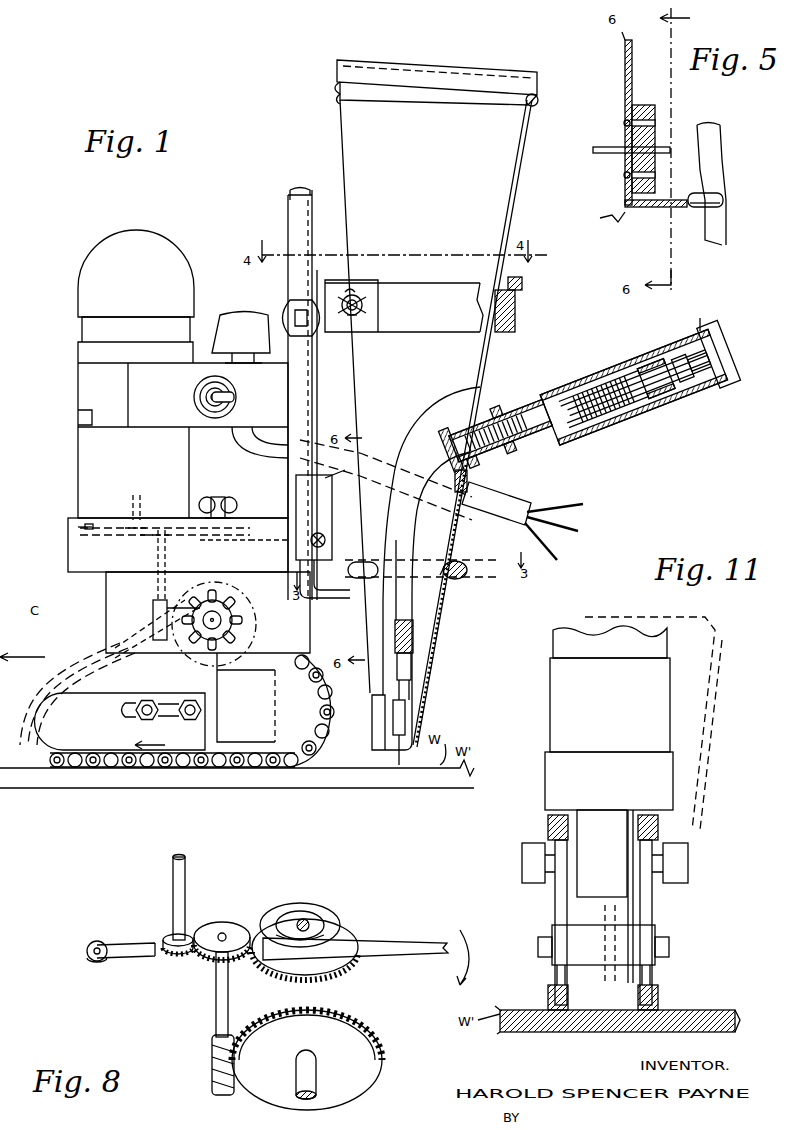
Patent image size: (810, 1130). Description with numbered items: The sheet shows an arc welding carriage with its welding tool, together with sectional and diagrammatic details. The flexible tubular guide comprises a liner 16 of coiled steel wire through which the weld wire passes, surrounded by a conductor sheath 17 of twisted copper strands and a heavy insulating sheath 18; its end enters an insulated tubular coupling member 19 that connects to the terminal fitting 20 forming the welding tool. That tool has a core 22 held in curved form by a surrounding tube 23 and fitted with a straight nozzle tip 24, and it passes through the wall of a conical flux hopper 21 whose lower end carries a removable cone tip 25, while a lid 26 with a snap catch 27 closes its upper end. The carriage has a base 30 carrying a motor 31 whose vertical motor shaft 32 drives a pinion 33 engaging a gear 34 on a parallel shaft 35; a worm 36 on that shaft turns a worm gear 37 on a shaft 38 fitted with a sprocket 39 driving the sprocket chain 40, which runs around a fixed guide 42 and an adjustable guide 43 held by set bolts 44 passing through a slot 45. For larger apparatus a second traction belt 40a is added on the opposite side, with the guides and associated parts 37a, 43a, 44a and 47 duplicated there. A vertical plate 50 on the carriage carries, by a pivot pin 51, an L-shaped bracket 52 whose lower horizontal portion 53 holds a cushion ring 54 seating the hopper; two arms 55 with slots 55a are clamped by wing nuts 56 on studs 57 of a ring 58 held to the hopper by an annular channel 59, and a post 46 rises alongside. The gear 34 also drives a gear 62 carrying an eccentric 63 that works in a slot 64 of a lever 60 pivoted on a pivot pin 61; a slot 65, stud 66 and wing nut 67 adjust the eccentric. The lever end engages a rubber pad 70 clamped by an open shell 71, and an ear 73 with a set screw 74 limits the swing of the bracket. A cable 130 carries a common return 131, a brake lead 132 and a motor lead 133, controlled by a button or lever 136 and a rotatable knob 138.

In FIG. 1, the liner 16 is at (622, 404).
In FIG. 1, the conductor sheath 17 is at (645, 397).
In FIG. 1, the insulating sheath 18 is at (722, 386).
In FIG. 1, the tubular coupling member 19 is at (558, 384).
In FIG. 1, the terminal fitting 20 is at (562, 440).
In FIG. 1, the flux hopper 21 is at (343, 158).
In FIG. 5, the flux hopper 21 is at (716, 146).
In FIG. 11, the flux hopper 21 is at (722, 716).
In FIG. 1, the core 22 is at (414, 630).
In FIG. 1, the surrounding tube 23 is at (412, 665).
In FIG. 1, the nozzle tip 24 is at (406, 702).
In FIG. 1, the cone tip 25 is at (372, 740).
In FIG. 1, the lid 26 is at (341, 60).
In FIG. 1, the snap catch 27 is at (334, 92).
In FIG. 1, the base 30 is at (68, 545).
In FIG. 11, the base 30 is at (609, 734).
In FIG. 1, the motor 31 is at (80, 333).
In FIG. 11, the motor 31 is at (553, 648).
In FIG. 1, the motor shaft 32 is at (132, 500).
In FIG. 8, the motor shaft 32 is at (172, 895).
In FIG. 1, the pinion 33 is at (125, 530).
In FIG. 8, the pinion 33 is at (170, 934).
In FIG. 1, the gear 34 is at (145, 536).
In FIG. 8, the gear 34 is at (205, 961).
In FIG. 1, the parallel shaft 35 is at (166, 553).
In FIG. 8, the parallel shaft 35 is at (216, 1003).
In FIG. 1, the worm 36 is at (152, 612).
In FIG. 8, the worm 36 is at (212, 1063).
In FIG. 1, the worm gear 37 is at (248, 600).
In FIG. 8, the worm gear 37 is at (360, 1031).
In FIG. 11, the worm gear 37 is at (688, 892).
In FIG. 11, the drum 37a is at (545, 895).
In FIG. 1, the shaft 38 is at (222, 618).
In FIG. 8, the shaft 38 is at (317, 1078).
In FIG. 1, the sprocket 39 is at (200, 606).
In FIG. 1, the sprocket chain 40 is at (178, 767).
In FIG. 11, the sprocket chain 40 is at (660, 827).
In FIG. 11, the second traction belt 40a is at (548, 826).
In FIG. 1, the fixed guide 42 is at (292, 733).
In FIG. 11, the fixed guide 42 is at (655, 917).
In FIG. 1, the adjustable guide 43 is at (73, 735).
In FIG. 11, the adjustable guide 43 is at (652, 975).
In FIG. 11, the chain link 43a is at (555, 972).
In FIG. 1, the set bolts 44 is at (165, 700).
In FIG. 11, the nut 44a is at (538, 950).
In FIG. 1, the slot 45 is at (130, 705).
In FIG. 1, the post 46 is at (288, 204).
In FIG. 11, the bolt 47 is at (670, 947).
In FIG. 1, the plate 50 is at (288, 400).
In FIG. 5, the plate 50 is at (632, 210).
In FIG. 1, the pivot pin 51 is at (305, 338).
In FIG. 1, the L-shaped bracket 52 is at (318, 400).
In FIG. 5, the L-shaped bracket 52 is at (631, 92).
In FIG. 1, the lower horizontal portion 53 is at (467, 570).
In FIG. 5, the lower horizontal portion 53 is at (695, 210).
In FIG. 1, the cushion ring 54 is at (462, 577).
In FIG. 5, the cushion ring 54 is at (718, 198).
In FIG. 1, the arms 55 is at (352, 318).
In FIG. 1, the slots 55a is at (346, 290).
In FIG. 1, the wing nuts 56 is at (353, 316).
In FIG. 1, the studs 57 is at (357, 295).
In FIG. 1, the ring 58 is at (515, 313).
In FIG. 1, the annular channel 59 is at (523, 283).
In FIG. 1, the lever 60 is at (270, 548).
In FIG. 5, the lever 60 is at (606, 156).
In FIG. 8, the lever 60 is at (388, 945).
In FIG. 1, the pivot pin 61 is at (80, 528).
In FIG. 8, the pivot pin 61 is at (90, 957).
In FIG. 1, the gear 62 is at (242, 541).
In FIG. 8, the gear 62 is at (345, 975).
In FIG. 8, the eccentric 63 is at (315, 915).
In FIG. 8, the slot 64 is at (285, 905).
In FIG. 8, the slot 65 is at (305, 918).
In FIG. 1, the stud 66 is at (215, 496).
In FIG. 8, the stud 66 is at (330, 926).
In FIG. 1, the wing nut 67 is at (205, 500).
In FIG. 5, the wing nut 67 is at (658, 165).
In FIG. 5, the pad 70 is at (624, 125).
In FIG. 1, the open shell 71 is at (327, 478).
In FIG. 5, the open shell 71 is at (656, 112).
In FIG. 1, the ear 73 is at (310, 528).
In FIG. 1, the set screw 74 is at (312, 540).
In FIG. 1, the insulated cable 130 is at (488, 497).
In FIG. 1, the common return 131 is at (571, 528).
In FIG. 1, the lead 132 is at (571, 503).
In FIG. 1, the lead 133 is at (560, 558).
In FIG. 1, the button or lever 136 is at (222, 405).
In FIG. 1, the rotatable knob 138 is at (246, 311).